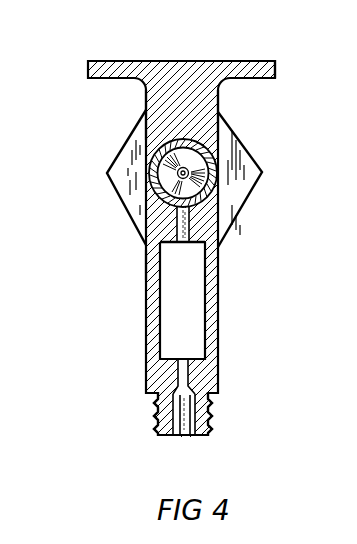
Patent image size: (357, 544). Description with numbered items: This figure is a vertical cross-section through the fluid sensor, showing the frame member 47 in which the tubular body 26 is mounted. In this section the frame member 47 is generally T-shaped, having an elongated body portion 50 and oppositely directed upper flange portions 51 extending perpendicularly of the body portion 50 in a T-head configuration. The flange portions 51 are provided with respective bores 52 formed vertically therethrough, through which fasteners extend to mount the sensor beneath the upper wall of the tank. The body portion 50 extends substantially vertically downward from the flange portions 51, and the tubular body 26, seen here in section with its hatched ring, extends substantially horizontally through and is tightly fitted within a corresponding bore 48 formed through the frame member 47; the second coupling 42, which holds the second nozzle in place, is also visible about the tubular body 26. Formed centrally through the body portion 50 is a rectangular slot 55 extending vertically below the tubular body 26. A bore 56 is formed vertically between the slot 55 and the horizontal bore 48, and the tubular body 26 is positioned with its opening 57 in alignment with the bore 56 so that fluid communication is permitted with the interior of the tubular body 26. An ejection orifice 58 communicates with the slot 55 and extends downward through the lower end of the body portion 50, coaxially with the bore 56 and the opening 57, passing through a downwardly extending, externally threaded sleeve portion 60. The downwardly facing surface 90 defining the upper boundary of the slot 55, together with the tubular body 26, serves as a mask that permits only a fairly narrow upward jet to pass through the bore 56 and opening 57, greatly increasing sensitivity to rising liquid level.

The tubular body 26 is at (214, 191).
The second coupling 42 is at (108, 163).
The frame member 47 is at (239, 301).
The bore 48 is at (197, 143).
The body portion 50 is at (223, 378).
The flange portions 51 is at (274, 67).
The bores 52 is at (105, 73).
The slot 55 is at (162, 300).
The bore 56 is at (185, 243).
The opening 57 is at (173, 219).
The ejection orifice 58 is at (185, 358).
The sleeve portion 60 is at (160, 410).
The downwardly facing surface 90 is at (156, 262).